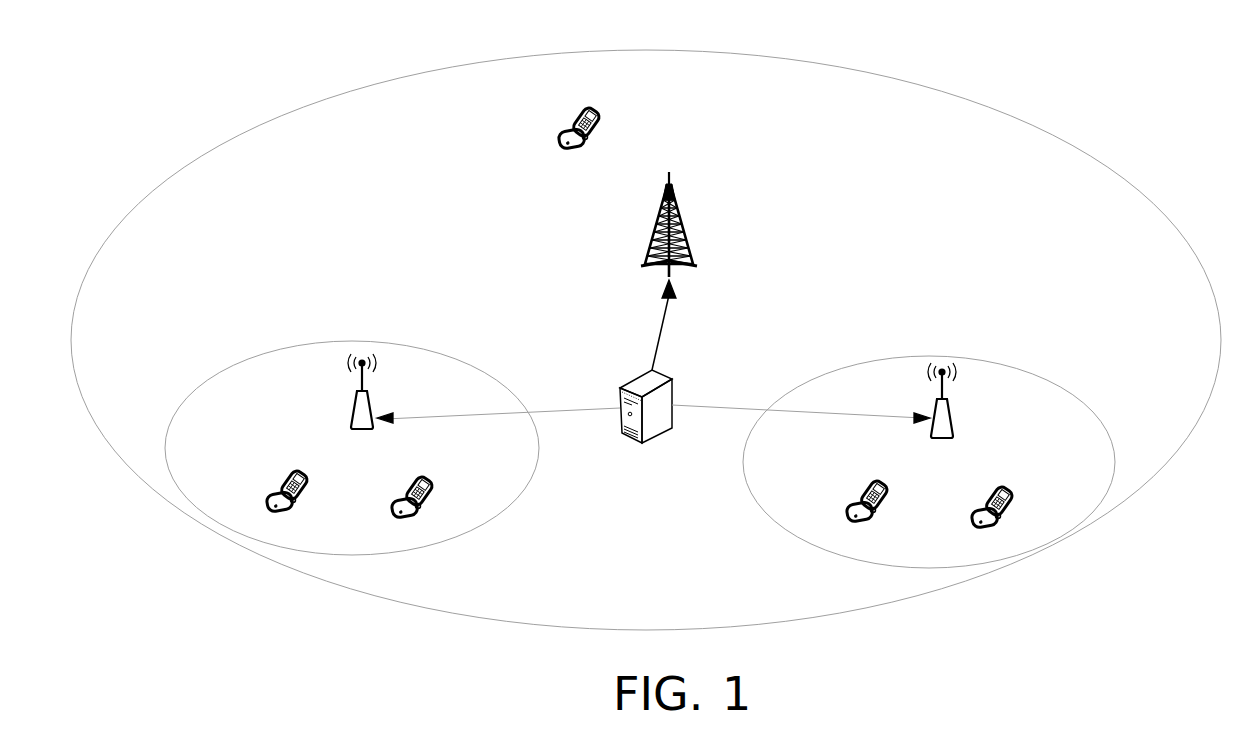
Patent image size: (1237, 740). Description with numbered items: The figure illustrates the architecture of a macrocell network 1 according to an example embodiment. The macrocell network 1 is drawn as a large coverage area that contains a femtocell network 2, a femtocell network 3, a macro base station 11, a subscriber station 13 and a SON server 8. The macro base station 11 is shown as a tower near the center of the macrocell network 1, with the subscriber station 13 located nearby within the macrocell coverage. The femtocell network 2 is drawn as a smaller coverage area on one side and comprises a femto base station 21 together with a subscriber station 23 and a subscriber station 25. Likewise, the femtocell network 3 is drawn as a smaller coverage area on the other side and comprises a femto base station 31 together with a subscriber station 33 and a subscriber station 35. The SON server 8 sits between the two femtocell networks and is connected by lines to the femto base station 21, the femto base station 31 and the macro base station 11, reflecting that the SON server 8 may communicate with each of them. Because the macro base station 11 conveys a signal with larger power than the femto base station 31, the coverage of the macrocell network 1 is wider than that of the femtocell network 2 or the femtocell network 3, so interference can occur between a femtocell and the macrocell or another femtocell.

The macrocell network 1 is at (672, 52).
The femtocell network 2 is at (373, 343).
The femtocell network 3 is at (866, 358).
The SON server 8 is at (660, 380).
The macro base station 11 is at (676, 212).
The subscriber station 13 is at (598, 110).
The femto base station 21 is at (372, 404).
The subscriber station 23 is at (300, 466).
The subscriber station 25 is at (428, 470).
The femto base station 31 is at (952, 412).
The subscriber station 33 is at (888, 478).
The subscriber station 35 is at (1010, 484).